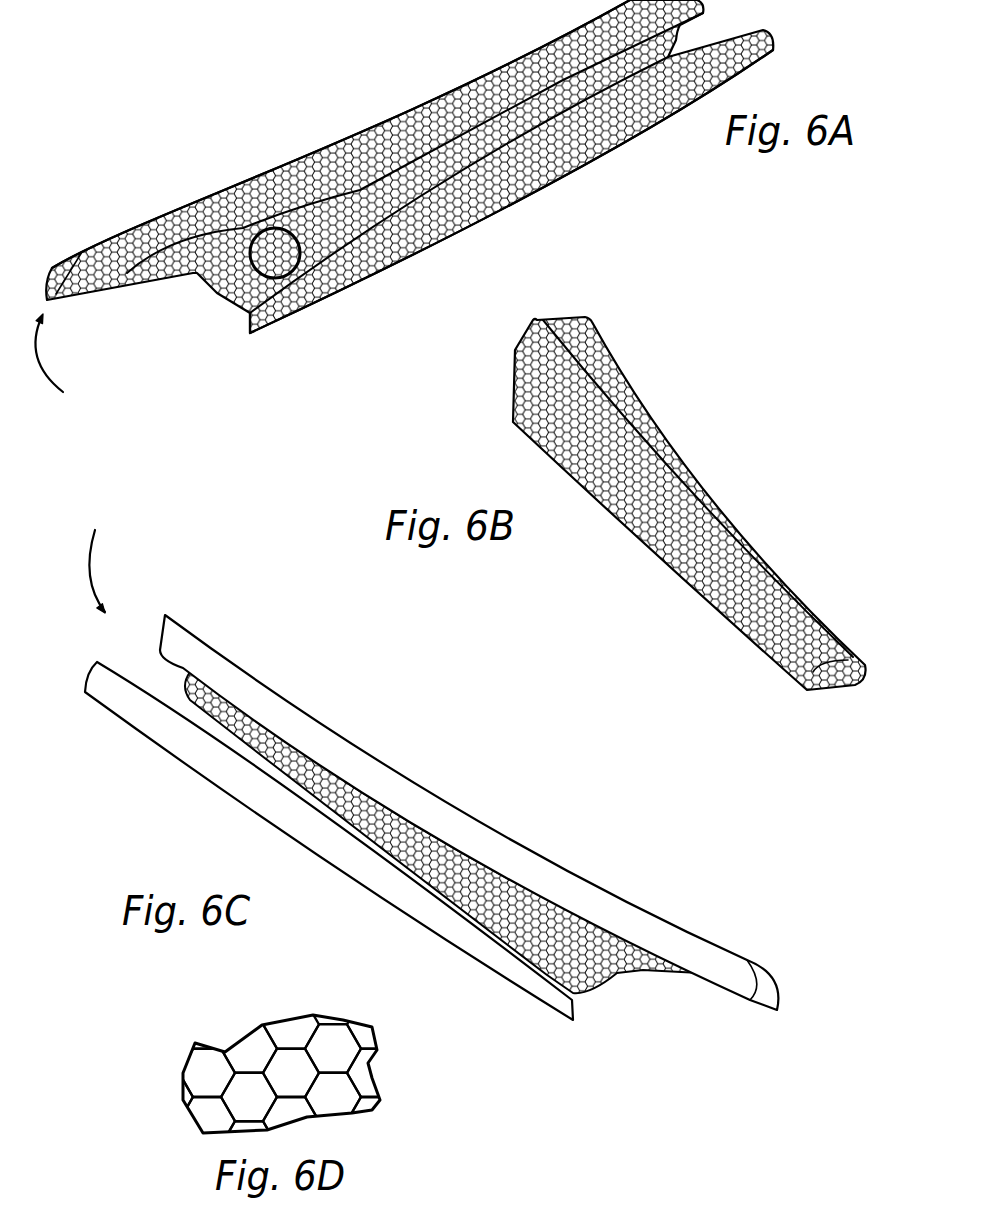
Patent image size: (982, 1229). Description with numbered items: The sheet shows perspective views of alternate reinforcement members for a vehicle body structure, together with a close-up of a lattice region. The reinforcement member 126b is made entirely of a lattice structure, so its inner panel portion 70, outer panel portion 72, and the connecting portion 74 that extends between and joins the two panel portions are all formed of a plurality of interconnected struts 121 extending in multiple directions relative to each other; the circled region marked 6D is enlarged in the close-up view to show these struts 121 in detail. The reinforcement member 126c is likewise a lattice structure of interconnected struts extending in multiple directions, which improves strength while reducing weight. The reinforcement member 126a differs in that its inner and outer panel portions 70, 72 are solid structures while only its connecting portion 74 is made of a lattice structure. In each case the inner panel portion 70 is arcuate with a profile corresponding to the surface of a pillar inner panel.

In FIG. 6A, the inner panel portion 70 is at (409, 215).
In FIG. 6C, the inner panel portion 70 is at (418, 817).
In FIG. 6A, the outer panel portion 72 is at (437, 122).
In FIG. 6C, the outer panel portion 72 is at (478, 832).
In FIG. 6A, the connecting portion 74 is at (243, 284).
In FIG. 6C, the connecting portion 74 is at (273, 743).
In FIG. 6D, the interconnected struts 121 is at (335, 1033).
In FIG. 6C, the reinforcement member 126a is at (104, 557).
In FIG. 6A, the reinforcement member 126b is at (76, 368).
In FIG. 6B, the reinforcement member 126c is at (495, 433).
In FIG. 6A, the detail view circle 6D is at (250, 235).